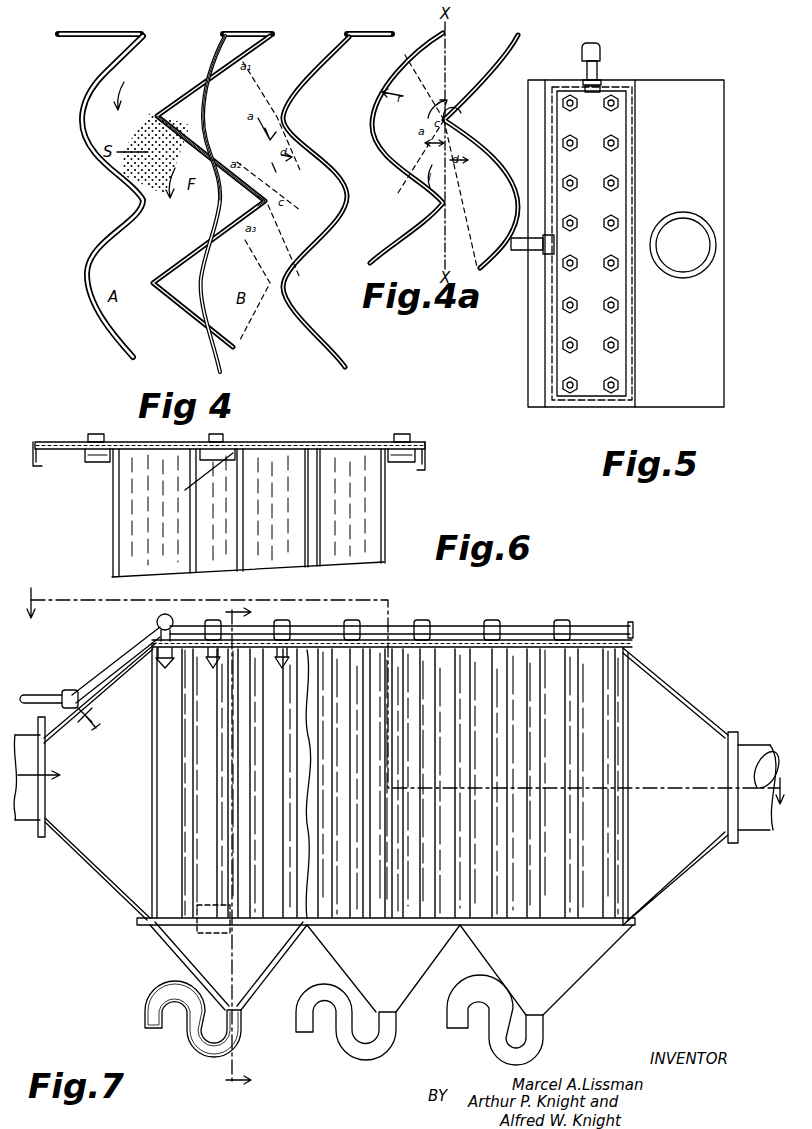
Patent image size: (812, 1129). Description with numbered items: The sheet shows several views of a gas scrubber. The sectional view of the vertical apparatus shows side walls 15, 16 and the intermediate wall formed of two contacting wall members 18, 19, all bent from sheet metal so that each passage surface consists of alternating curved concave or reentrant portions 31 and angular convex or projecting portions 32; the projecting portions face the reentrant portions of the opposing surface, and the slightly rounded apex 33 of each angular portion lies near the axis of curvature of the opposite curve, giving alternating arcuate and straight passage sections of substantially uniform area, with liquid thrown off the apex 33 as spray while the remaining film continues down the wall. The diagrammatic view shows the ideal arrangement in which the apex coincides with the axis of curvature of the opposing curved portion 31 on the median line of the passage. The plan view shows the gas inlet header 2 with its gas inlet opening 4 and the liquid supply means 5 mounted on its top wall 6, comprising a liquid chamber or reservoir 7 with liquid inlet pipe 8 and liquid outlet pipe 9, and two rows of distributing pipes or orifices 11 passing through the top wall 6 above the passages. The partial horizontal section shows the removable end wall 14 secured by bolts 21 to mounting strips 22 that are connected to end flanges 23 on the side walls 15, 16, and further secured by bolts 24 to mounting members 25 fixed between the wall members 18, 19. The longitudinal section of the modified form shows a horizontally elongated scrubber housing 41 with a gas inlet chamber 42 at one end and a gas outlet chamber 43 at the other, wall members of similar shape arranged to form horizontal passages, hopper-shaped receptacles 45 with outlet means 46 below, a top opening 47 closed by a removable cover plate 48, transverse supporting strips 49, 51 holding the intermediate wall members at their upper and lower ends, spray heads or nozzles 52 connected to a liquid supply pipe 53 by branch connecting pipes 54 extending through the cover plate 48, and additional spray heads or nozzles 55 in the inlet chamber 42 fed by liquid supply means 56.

In FIG. 5, the gas inlet header 2 is at (725, 336).
In FIG. 5, the gas inlet opening 4 is at (690, 216).
In FIG. 5, the liquid supply means 5 is at (590, 204).
In FIG. 5, the top wall 6 is at (652, 243).
In FIG. 5, the liquid chamber or reservoir 7 is at (626, 163).
In FIG. 5, the liquid inlet pipe 8 is at (529, 252).
In FIG. 7, the liquid inlet pipe 8 is at (402, 712).
In FIG. 5, the liquid outlet pipe 9 is at (601, 49).
In FIG. 7, the liquid outlet pipe 9 is at (245, 851).
In FIG. 5, the distributing pipes or orifices 11 is at (582, 368).
In FIG. 6, the end wall 14 is at (306, 446).
In FIG. 4, the side wall 15 is at (95, 333).
In FIG. 6, the side wall 15 is at (113, 510).
In FIG. 4, the side wall 16 is at (308, 301).
In FIG. 6, the side wall 16 is at (318, 548).
In FIG. 4, the wall member 18 is at (188, 312).
In FIG. 6, the wall member 18 is at (190, 552).
In FIG. 4, the wall member 19 is at (203, 292).
In FIG. 6, the wall member 19 is at (243, 550).
In FIG. 6, the bolts 21 is at (95, 434).
In FIG. 6, the mounting strips 22 is at (96, 463).
In FIG. 6, the end flanges 23 is at (60, 458).
In FIG. 6, the bolts 24 is at (224, 437).
In FIG. 6, the mounting members 25 is at (199, 476).
In FIG. 4, the curved concave or reentrant portions 31 is at (208, 105).
In FIG. 4A, the curved concave or reentrant portions 31 is at (374, 109).
In FIG. 4, the angular convex or projecting portions 32 is at (238, 200).
In FIG. 4A, the angular convex or projecting portions 32 is at (478, 104).
In FIG. 4, the apex 33 is at (267, 210).
In FIG. 4A, the apex 33 is at (462, 113).
In FIG. 7, the scrubber housing 41 is at (450, 660).
In FIG. 7, the gas inlet chamber 42 is at (85, 781).
In FIG. 7, the gas outlet chamber 43 is at (701, 786).
In FIG. 7, the hopper-shaped receptacles 45 is at (578, 979).
In FIG. 7, the outlet means 46 is at (485, 1029).
In FIG. 7, the opening 47 is at (177, 627).
In FIG. 7, the removable cover plate 48 is at (302, 636).
In FIG. 7, the transverse supporting strips 49 is at (222, 938).
In FIG. 7, the transverse supporting strips 51 is at (283, 663).
In FIG. 7, the liquid spray heads or nozzles 52 is at (212, 670).
In FIG. 7, the liquid supply pipe 53 is at (393, 627).
In FIG. 7, the branch connecting pipes 54 is at (232, 612).
In FIG. 7, the additional spray heads or nozzles 55 is at (157, 661).
In FIG. 7, the liquid supply means 56 is at (44, 693).